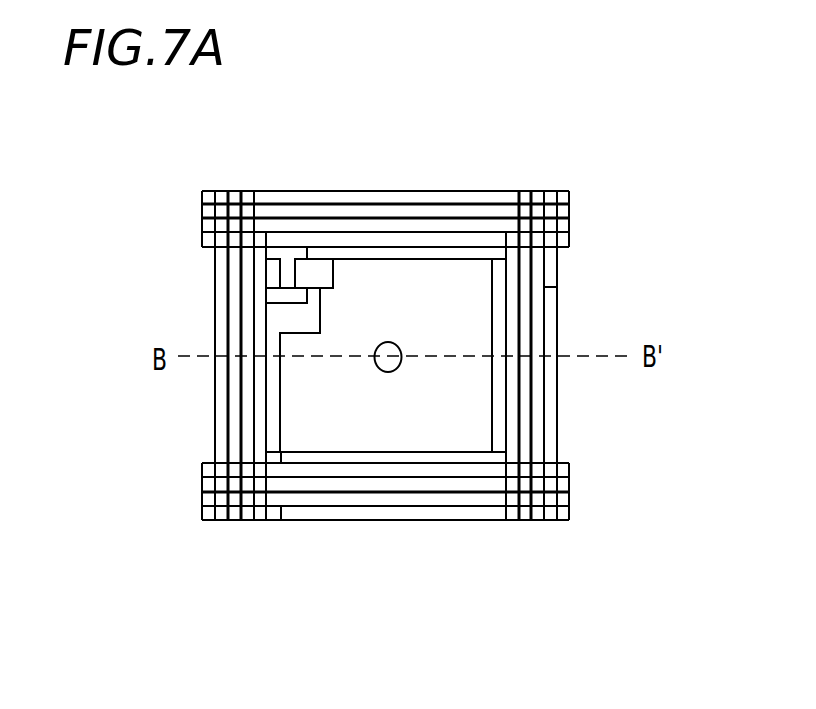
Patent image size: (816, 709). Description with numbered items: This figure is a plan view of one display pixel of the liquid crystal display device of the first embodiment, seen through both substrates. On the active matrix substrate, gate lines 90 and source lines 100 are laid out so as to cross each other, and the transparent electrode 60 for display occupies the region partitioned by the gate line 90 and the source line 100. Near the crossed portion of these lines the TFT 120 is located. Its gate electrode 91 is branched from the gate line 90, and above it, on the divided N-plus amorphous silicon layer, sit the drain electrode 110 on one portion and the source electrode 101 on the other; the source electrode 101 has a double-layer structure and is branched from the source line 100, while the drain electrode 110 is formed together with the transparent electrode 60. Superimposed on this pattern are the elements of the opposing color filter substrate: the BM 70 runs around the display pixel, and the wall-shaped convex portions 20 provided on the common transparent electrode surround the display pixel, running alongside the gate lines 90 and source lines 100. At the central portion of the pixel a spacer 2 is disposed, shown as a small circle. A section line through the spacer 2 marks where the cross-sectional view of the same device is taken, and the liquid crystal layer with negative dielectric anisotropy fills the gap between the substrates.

The BM 70 is at (452, 197).
The gate line 90 is at (345, 208).
The gate electrode 91 is at (287, 259).
The wall-shaped convex portion 20 is at (530, 460).
The source electrode 101 is at (268, 270).
The TFT 120 is at (283, 295).
The drain electrode 110 is at (318, 280).
The transparent electrode 60 is at (473, 322).
The source line 100 is at (538, 397).
The spacer 2 is at (386, 371).